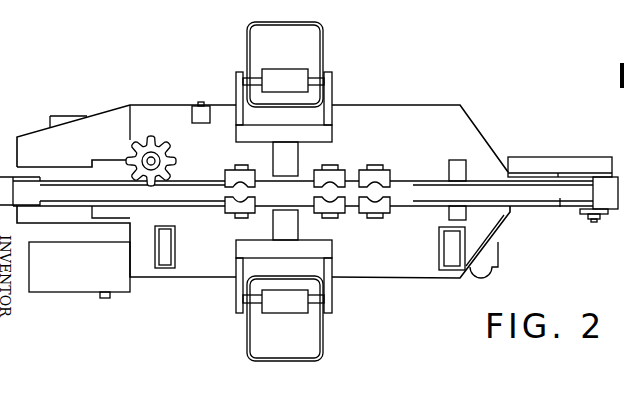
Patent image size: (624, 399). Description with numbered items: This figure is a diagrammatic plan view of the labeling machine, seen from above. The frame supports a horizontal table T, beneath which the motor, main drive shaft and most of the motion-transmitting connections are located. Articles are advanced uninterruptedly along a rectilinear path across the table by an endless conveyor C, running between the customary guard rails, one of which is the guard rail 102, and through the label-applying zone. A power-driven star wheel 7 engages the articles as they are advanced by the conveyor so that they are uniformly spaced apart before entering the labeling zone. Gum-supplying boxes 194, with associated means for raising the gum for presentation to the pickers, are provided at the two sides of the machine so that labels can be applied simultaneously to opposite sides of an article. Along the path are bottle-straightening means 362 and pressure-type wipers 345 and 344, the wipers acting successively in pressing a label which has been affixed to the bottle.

The gum-supplying boxes 194 is at (312, 53).
The star wheel 7 is at (134, 152).
The endless conveyor C is at (125, 194).
The horizontal table T is at (468, 140).
The bottle-straightening means 362 is at (232, 218).
The pressure-type wiper 345 is at (344, 214).
The pressure-type wiper 344 is at (392, 208).
The guard rail 102 is at (513, 209).